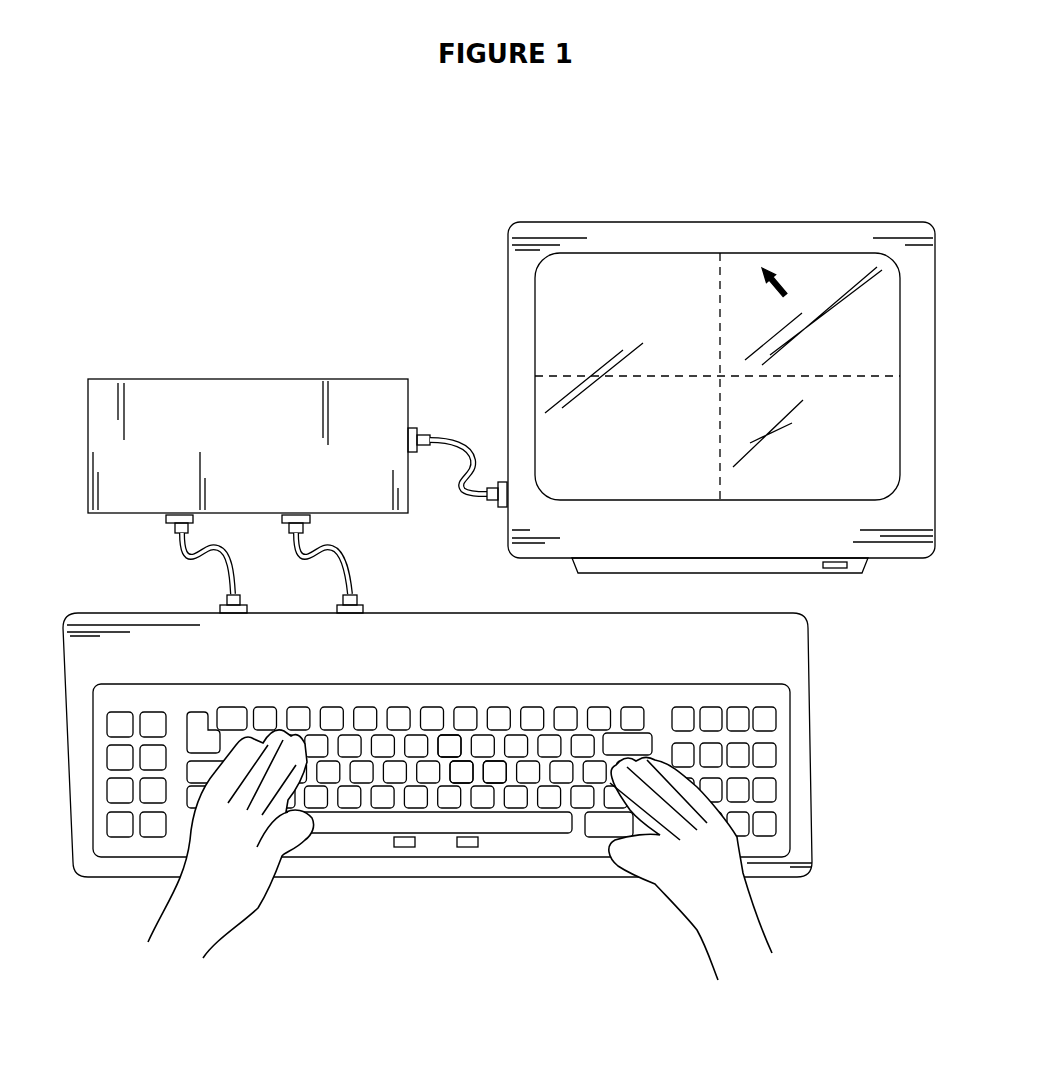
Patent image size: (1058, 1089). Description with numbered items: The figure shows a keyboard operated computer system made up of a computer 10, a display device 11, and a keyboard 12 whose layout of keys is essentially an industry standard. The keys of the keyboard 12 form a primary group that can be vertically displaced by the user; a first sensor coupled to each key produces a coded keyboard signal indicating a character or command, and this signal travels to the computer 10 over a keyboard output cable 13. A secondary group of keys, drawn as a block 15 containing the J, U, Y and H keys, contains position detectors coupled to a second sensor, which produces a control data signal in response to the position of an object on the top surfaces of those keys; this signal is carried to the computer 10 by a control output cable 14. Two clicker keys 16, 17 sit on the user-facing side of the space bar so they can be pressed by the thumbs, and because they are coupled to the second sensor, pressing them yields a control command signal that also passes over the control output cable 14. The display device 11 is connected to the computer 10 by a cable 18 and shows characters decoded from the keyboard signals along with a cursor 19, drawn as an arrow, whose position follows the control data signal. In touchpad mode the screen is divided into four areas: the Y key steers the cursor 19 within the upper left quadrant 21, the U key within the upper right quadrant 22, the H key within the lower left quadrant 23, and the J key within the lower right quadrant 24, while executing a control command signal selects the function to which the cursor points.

The computer 10 is at (242, 379).
The display device 11 is at (508, 332).
The keyboard 12 is at (800, 653).
The keyboard output cable 13 is at (187, 553).
The control output cable 14 is at (300, 553).
The block of keys 15 is at (497, 767).
The clicker key 16 is at (405, 847).
The clicker key 17 is at (468, 847).
The cable 18 is at (458, 443).
The cursor 19 is at (787, 282).
The upper left quadrant area 21 is at (594, 358).
The upper right quadrant area 22 is at (813, 316).
The lower left quadrant area 23 is at (594, 453).
The lower right quadrant area 24 is at (778, 433).